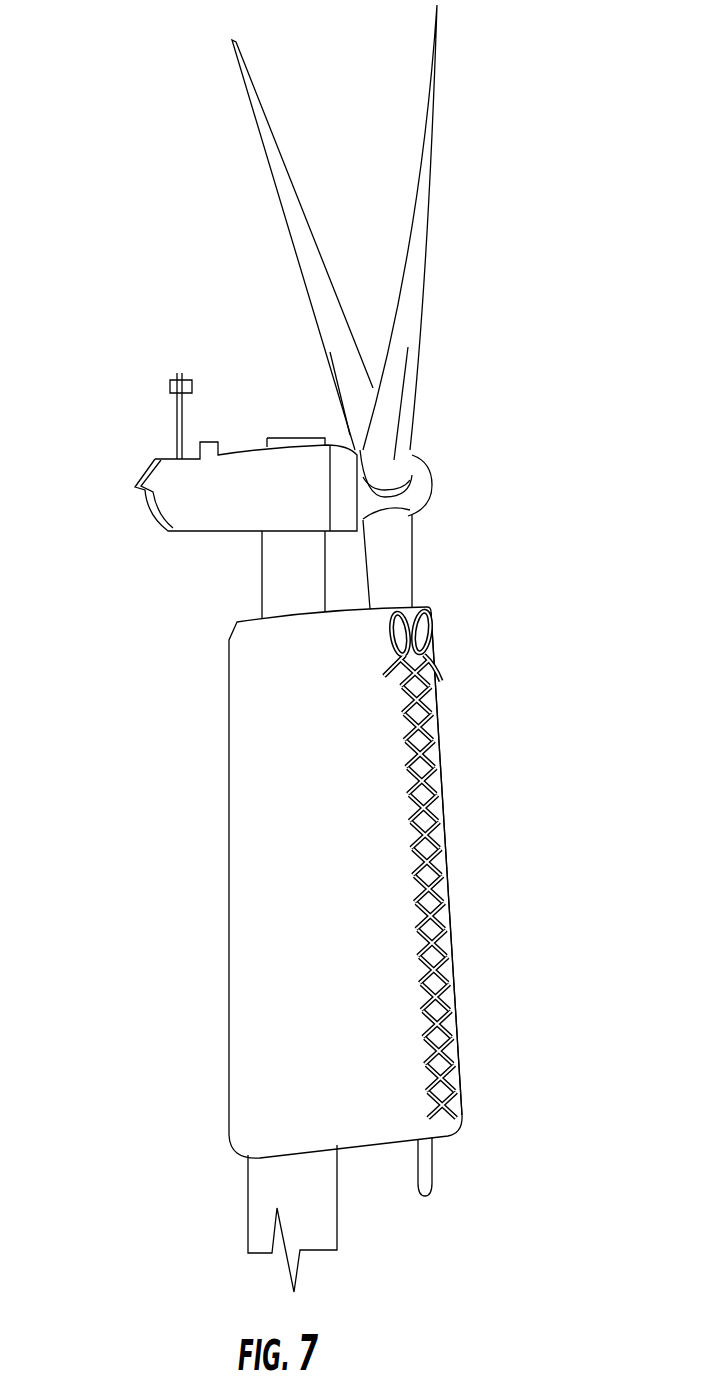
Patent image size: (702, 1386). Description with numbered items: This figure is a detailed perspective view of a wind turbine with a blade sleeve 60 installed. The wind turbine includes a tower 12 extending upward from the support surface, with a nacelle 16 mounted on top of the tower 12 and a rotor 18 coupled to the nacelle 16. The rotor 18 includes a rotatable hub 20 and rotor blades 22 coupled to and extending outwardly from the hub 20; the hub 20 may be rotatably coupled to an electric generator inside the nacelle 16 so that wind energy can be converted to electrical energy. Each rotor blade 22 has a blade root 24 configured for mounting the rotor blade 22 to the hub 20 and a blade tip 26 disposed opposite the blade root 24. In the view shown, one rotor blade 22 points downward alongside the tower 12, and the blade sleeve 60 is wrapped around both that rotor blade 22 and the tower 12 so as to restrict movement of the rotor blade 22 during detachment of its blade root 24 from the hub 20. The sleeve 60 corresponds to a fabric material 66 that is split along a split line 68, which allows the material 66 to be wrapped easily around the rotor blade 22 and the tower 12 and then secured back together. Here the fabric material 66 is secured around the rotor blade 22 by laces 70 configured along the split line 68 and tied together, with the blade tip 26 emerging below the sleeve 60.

The tower 12 is at (277, 570).
The nacelle 16 is at (170, 530).
The rotor 18 is at (434, 455).
The rotatable hub 20 is at (432, 485).
The rotor blade 22 is at (410, 211).
The blade root 24 is at (390, 537).
The blade tip 26 is at (433, 1170).
The blade sleeve 60 is at (263, 843).
The fabric material 66 is at (268, 690).
The split line 68 is at (445, 1095).
The laces 70 is at (447, 950).